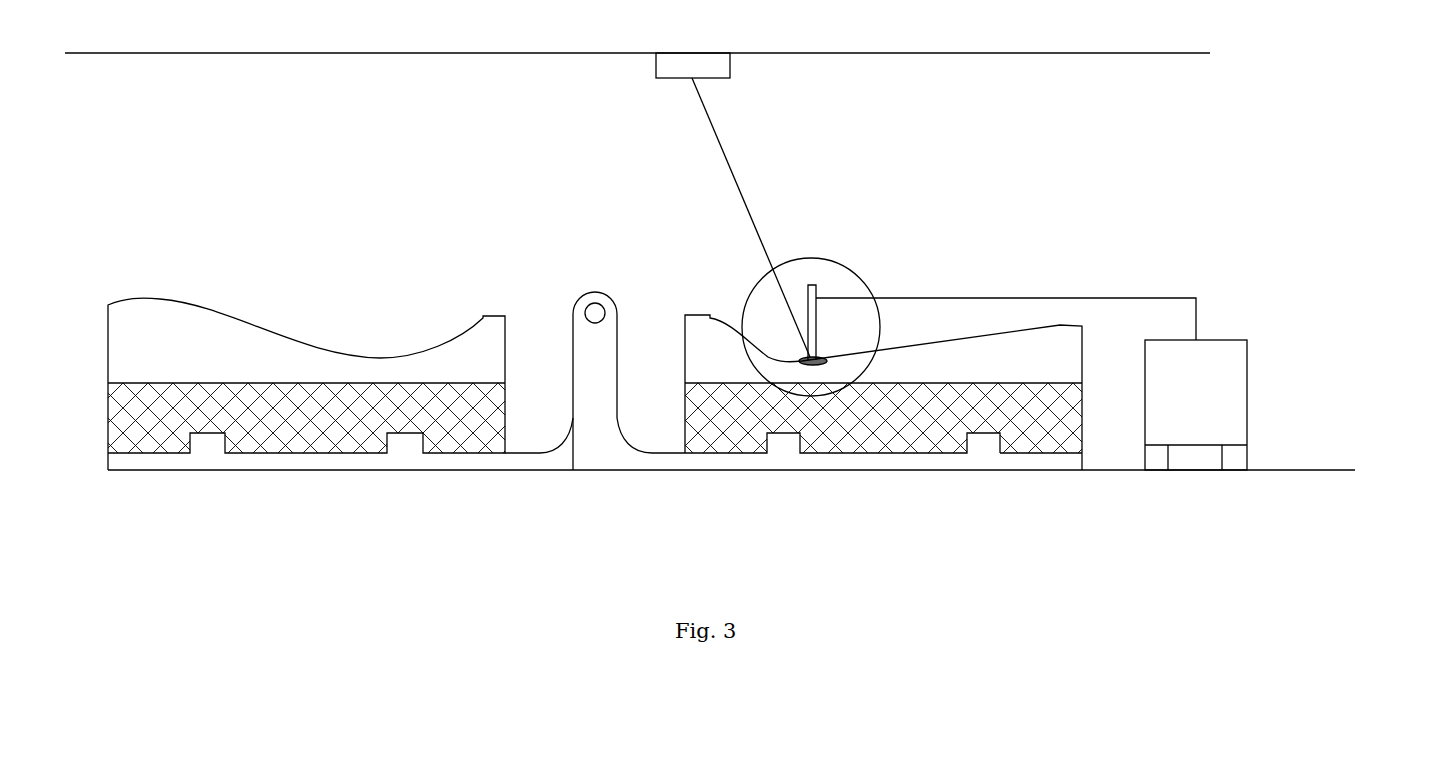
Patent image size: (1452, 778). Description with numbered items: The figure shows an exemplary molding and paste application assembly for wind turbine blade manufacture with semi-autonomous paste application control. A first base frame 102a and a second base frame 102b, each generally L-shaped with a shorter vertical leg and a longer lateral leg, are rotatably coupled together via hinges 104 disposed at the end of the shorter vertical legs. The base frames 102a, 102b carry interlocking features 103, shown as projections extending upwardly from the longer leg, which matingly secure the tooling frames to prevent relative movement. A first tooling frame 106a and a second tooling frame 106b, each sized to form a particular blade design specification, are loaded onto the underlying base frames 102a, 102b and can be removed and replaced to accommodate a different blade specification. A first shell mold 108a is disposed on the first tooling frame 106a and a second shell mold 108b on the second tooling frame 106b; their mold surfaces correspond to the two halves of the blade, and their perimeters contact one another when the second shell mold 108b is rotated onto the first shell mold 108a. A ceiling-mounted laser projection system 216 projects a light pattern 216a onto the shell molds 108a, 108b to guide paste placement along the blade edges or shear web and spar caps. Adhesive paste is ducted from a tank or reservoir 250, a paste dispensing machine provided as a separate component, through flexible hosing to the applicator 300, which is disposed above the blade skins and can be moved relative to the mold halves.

The first base frame 102a is at (306, 424).
The second base frame 102b is at (883, 434).
The interlocking features 103 is at (437, 467).
The hinges 104 is at (619, 294).
The first tooling frame 106a is at (216, 419).
The second tooling frame 106b is at (1061, 419).
The first shell mold 108a is at (218, 359).
The second shell mold 108b is at (1061, 359).
The laser projection system 216 is at (658, 78).
The light pattern 216a is at (751, 217).
The tank or reservoir 250 is at (1212, 338).
The applicator 300 is at (835, 258).